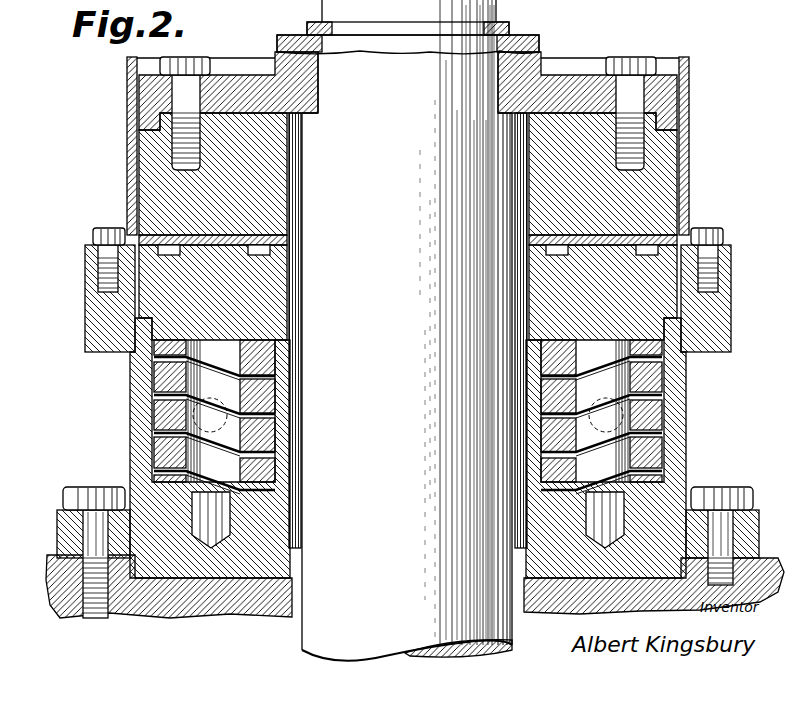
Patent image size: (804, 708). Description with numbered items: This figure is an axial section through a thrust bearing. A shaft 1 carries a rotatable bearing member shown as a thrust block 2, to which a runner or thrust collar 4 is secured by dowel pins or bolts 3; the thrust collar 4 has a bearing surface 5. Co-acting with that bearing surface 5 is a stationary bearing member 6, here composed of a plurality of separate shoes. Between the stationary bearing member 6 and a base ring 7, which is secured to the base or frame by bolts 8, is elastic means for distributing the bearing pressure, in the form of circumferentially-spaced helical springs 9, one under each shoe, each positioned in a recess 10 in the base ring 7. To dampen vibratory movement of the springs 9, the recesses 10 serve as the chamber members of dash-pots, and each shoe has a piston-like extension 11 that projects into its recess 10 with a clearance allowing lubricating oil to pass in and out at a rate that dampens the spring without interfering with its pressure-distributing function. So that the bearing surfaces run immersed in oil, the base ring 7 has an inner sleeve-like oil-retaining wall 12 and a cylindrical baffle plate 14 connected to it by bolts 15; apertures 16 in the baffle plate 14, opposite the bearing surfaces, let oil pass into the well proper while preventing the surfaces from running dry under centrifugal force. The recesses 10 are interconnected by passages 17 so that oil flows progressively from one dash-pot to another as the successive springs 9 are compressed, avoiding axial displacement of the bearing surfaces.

The shaft 1 is at (322, 12).
The thrust block 2 is at (538, 54).
The dowel pins or bolts 3 is at (163, 60).
The runner or thrust collar 4 is at (147, 150).
The bearing surface 5 is at (650, 232).
The stationary bearing member 6 is at (160, 295).
The base ring 7 is at (65, 527).
The bolts 8 is at (93, 497).
The helical springs 9 is at (165, 412).
The recesses 10 is at (148, 448).
The piston-like extension 11 is at (135, 350).
The inner sleeve-like oil-retaining wall 12 is at (522, 310).
The cylindrical baffle plate 14 is at (690, 92).
The bolts 15 is at (105, 223).
The apertures 16 is at (127, 228).
The passages 17 is at (249, 0).